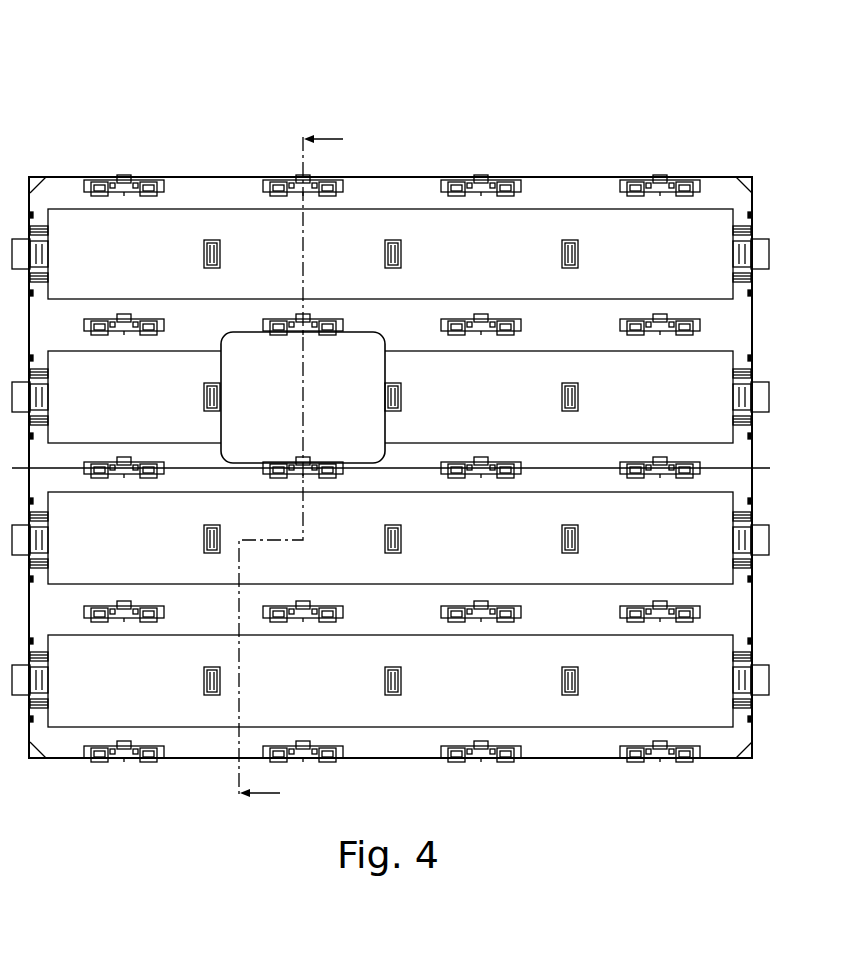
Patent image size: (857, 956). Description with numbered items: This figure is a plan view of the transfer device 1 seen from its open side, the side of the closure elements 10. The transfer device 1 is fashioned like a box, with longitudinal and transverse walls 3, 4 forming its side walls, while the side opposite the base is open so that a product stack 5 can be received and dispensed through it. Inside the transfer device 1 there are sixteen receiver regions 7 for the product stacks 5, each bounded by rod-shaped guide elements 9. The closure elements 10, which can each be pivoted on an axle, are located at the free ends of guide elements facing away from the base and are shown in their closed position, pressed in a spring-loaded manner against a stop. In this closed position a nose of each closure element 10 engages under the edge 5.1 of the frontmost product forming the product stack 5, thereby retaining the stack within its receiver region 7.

The transfer device 1 is at (431, 434).
The longitudinal wall 3 is at (190, 176).
The transverse wall 4 is at (755, 323).
The product stack 5 is at (342, 372).
The edge of the frontmost product 5.1 is at (247, 332).
The receiver region 7 is at (652, 540).
The guide element 9 is at (583, 393).
The closure element 10 is at (698, 615).